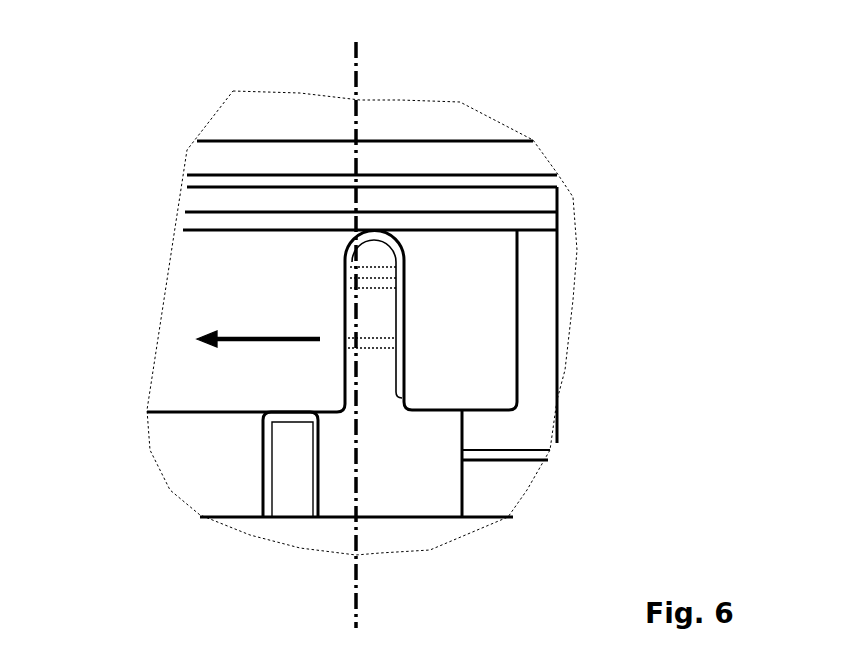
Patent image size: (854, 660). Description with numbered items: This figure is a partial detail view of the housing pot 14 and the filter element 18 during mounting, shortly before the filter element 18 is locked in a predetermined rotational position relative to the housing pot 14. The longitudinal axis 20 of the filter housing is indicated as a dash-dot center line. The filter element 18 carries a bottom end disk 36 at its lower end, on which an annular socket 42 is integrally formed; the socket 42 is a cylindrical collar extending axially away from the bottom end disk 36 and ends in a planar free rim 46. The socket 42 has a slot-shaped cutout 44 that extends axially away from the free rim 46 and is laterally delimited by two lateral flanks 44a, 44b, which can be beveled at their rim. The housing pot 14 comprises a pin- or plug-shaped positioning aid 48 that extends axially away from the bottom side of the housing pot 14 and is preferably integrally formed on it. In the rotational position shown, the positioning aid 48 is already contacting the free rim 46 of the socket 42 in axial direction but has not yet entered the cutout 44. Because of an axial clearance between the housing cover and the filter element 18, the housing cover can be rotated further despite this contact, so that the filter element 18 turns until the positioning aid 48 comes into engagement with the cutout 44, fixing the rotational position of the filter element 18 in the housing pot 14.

The housing pot 14 is at (440, 535).
The filter element 18 is at (486, 133).
The longitudinal axis of the filter housing 20 is at (359, 68).
The bottom end disk 36 is at (539, 220).
The annular socket 42 is at (480, 344).
The cutout 44 is at (378, 363).
The lateral flank 44a is at (350, 348).
The lateral flank 44b is at (400, 327).
The free rim 46 is at (433, 410).
The positioning aid 48 is at (292, 459).